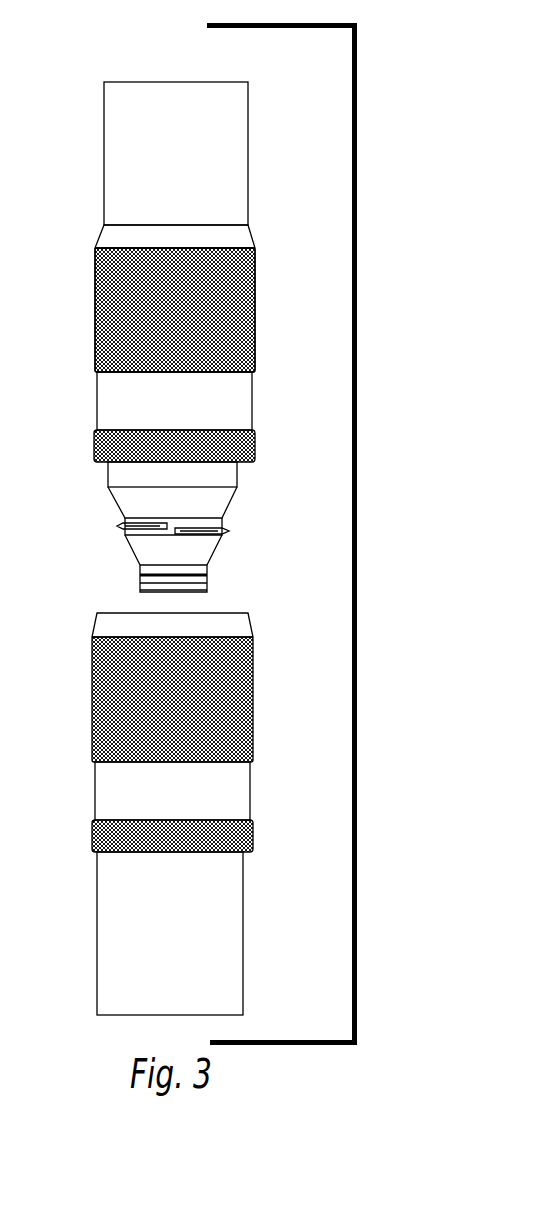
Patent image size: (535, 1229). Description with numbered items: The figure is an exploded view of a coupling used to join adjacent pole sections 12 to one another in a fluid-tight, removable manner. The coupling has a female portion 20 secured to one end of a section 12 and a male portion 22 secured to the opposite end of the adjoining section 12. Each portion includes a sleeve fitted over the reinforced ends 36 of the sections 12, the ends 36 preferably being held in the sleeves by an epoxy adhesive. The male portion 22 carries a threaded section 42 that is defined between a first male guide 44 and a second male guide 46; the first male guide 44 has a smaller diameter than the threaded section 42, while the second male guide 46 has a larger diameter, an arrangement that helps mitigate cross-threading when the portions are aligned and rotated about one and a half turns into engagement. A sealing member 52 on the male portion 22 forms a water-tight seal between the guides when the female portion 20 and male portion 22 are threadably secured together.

The section 12 is at (104, 176).
The female portion 20 is at (92, 707).
The male portion 22 is at (95, 332).
The ends 36 is at (255, 268).
The threaded section 42 is at (122, 525).
The first male guide 44 is at (140, 568).
The second male guide 46 is at (108, 475).
The sealing member 52 is at (207, 578).